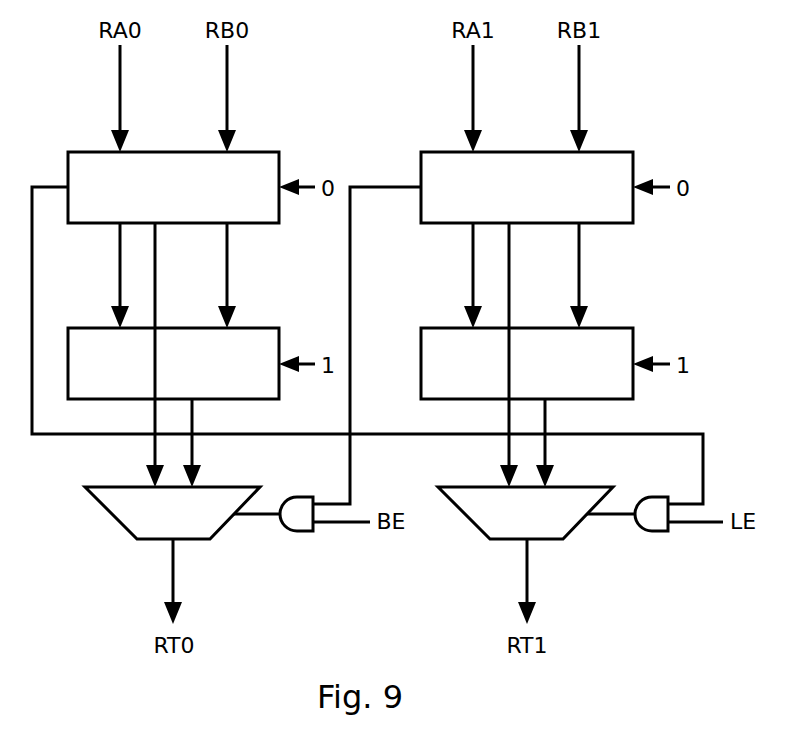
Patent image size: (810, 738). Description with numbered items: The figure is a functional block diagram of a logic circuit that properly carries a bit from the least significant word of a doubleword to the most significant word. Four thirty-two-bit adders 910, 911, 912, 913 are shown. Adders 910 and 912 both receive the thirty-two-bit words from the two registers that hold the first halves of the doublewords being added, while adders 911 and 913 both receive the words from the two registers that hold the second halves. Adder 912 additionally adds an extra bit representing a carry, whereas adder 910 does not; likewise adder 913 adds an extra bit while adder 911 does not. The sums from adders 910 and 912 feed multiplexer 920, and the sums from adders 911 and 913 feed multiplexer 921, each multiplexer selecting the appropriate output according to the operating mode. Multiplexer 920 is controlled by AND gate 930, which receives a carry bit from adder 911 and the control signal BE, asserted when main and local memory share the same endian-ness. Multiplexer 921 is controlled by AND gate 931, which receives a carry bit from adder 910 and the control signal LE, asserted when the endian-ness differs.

The 32-bit adder 910 is at (263, 152).
The 32-bit adder 911 is at (619, 152).
The 32-bit adder 912 is at (263, 328).
The 32-bit adder 913 is at (619, 328).
The multiplexer 920 is at (130, 534).
The multiplexer 921 is at (483, 534).
The AND gate 930 is at (298, 532).
The AND gate 931 is at (653, 532).